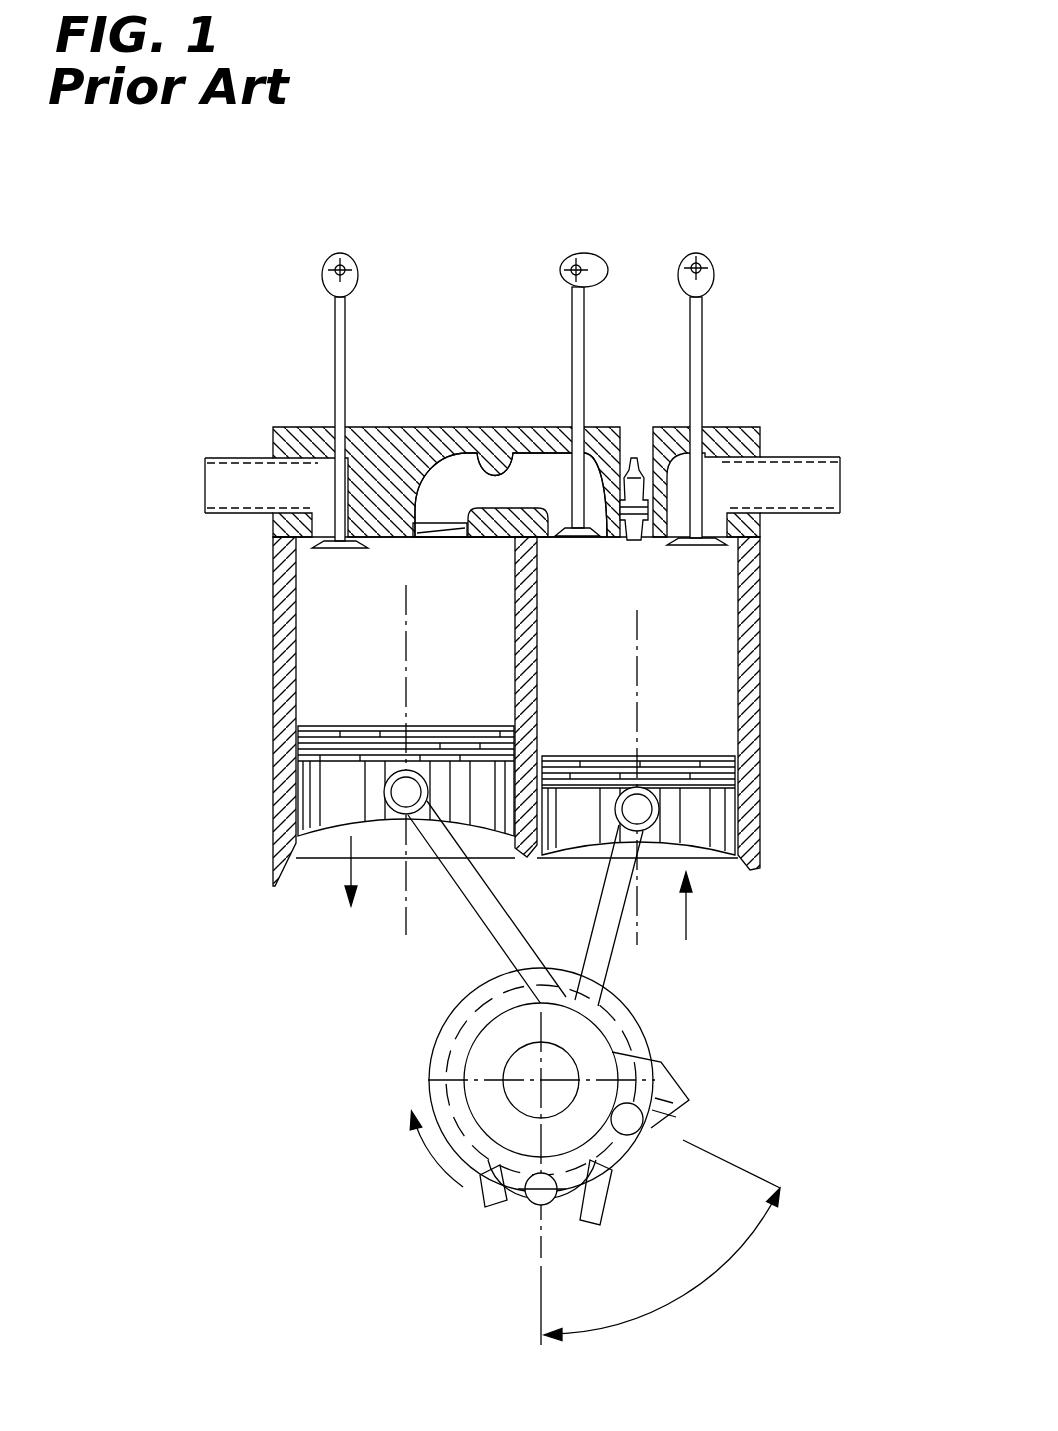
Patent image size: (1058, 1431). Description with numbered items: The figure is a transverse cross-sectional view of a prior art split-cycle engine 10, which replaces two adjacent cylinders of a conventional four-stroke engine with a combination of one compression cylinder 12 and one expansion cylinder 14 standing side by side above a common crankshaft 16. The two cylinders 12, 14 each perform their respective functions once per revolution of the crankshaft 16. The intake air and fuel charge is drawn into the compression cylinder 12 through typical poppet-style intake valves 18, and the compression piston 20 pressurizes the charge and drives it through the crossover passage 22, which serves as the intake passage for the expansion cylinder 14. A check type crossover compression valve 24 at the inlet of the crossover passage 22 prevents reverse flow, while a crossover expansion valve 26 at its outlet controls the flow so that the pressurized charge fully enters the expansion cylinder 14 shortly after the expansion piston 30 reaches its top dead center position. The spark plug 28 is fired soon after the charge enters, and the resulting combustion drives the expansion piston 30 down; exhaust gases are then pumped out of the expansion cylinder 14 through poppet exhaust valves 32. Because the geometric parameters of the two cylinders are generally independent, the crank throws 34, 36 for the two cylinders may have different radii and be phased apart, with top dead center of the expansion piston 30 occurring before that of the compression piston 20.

The split-cycle engine 10 is at (808, 348).
The compression cylinder 12 is at (305, 662).
The expansion cylinder 14 is at (742, 583).
The crankshaft 16 is at (527, 1067).
The intake valves 18 is at (334, 330).
The compression piston 20 is at (320, 813).
The crossover passage 22 is at (487, 472).
The crossover compression valve 24 is at (443, 522).
The crossover expansion valve 26 is at (586, 365).
The spark plug 28 is at (634, 462).
The expansion piston 30 is at (720, 835).
The exhaust valves 32 is at (702, 345).
The crank throw 34 is at (636, 1122).
The crank throw 36 is at (538, 1195).